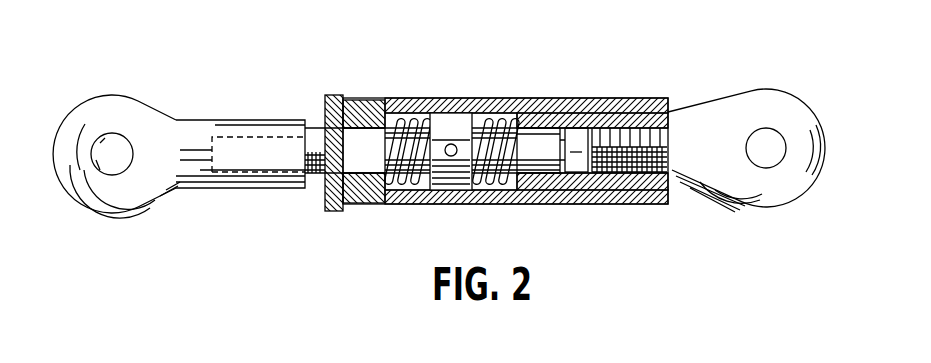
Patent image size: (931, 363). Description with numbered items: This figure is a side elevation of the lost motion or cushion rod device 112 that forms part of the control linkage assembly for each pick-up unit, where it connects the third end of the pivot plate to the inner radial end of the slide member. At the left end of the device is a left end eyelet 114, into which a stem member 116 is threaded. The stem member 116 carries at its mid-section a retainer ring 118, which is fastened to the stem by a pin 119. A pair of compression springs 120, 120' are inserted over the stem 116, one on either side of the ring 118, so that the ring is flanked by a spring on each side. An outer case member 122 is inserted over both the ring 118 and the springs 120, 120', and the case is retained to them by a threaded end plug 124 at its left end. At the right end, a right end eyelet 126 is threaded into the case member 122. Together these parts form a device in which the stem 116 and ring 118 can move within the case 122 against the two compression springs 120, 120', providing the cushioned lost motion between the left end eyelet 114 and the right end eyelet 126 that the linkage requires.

The cushion rod device 112 is at (499, 212).
The left end eyelet 114 is at (112, 102).
The stem member 116 is at (317, 118).
The retainer ring 118 is at (445, 118).
The pin 119 is at (453, 144).
The compression spring 120 is at (400, 115).
The compression spring 120' is at (524, 124).
The outer case member 122 is at (653, 73).
The threaded end plug 124 is at (332, 212).
The right end eyelet 126 is at (768, 100).